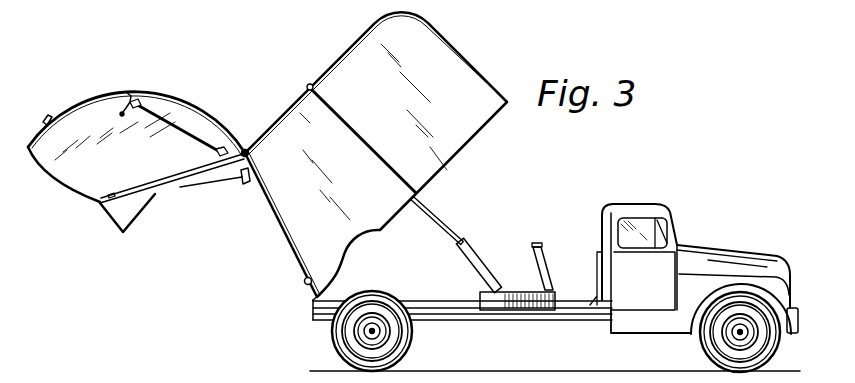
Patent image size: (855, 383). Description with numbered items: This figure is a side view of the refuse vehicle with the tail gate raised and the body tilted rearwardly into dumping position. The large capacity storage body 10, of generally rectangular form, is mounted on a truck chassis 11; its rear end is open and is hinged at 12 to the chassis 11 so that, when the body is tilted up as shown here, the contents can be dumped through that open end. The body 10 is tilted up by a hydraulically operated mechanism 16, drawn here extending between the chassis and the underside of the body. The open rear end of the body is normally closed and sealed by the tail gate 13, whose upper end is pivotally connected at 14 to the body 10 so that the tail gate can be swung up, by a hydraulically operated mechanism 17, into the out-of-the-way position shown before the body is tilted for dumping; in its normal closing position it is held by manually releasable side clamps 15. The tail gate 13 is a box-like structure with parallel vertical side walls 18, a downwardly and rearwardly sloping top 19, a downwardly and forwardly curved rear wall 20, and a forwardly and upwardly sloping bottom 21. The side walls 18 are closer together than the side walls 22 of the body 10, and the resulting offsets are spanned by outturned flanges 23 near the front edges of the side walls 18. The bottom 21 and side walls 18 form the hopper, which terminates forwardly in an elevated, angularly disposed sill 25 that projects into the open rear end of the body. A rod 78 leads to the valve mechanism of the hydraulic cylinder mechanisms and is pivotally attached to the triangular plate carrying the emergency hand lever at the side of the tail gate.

The storage body 10 is at (468, 67).
The truck chassis 11 is at (563, 322).
The hinge 12 is at (313, 300).
The tail gate 13 is at (165, 95).
The pivotal connection 14 is at (245, 147).
The side clamps 15 is at (303, 281).
The hydraulically operated mechanism 16 is at (443, 226).
The hydraulically operated mechanism 17 is at (244, 180).
The side walls 18 is at (136, 130).
The top 19 is at (203, 112).
The rear wall 20 is at (78, 106).
The bottom 21 is at (55, 183).
The side walls 22 is at (373, 132).
The outturned flanges 23 is at (162, 183).
The sill 25 is at (123, 232).
The rod 78 is at (178, 126).